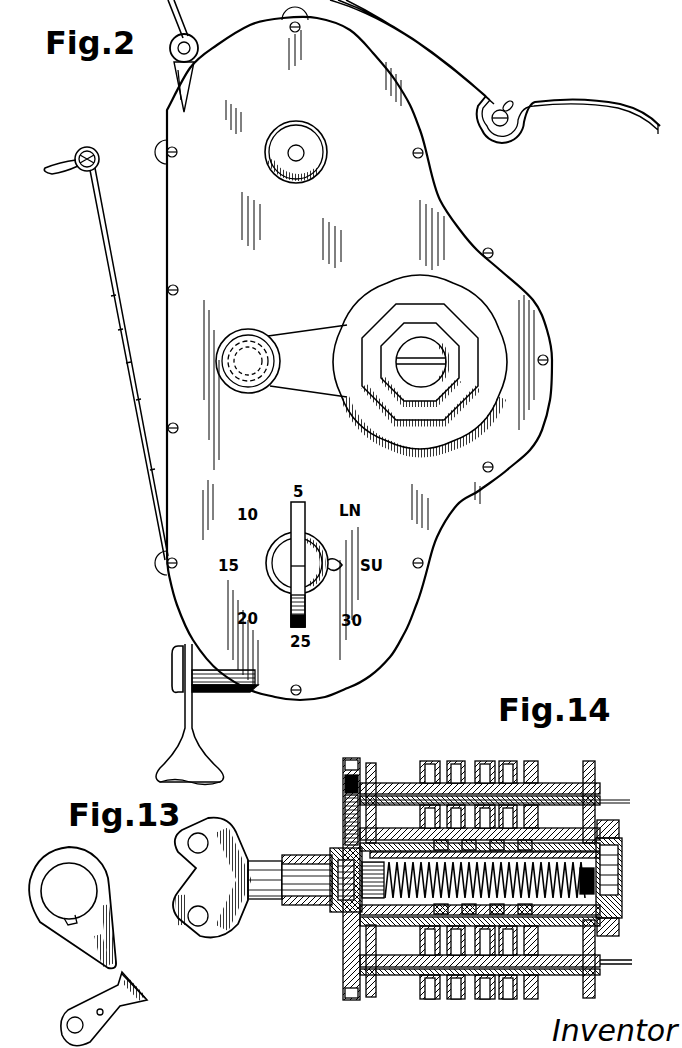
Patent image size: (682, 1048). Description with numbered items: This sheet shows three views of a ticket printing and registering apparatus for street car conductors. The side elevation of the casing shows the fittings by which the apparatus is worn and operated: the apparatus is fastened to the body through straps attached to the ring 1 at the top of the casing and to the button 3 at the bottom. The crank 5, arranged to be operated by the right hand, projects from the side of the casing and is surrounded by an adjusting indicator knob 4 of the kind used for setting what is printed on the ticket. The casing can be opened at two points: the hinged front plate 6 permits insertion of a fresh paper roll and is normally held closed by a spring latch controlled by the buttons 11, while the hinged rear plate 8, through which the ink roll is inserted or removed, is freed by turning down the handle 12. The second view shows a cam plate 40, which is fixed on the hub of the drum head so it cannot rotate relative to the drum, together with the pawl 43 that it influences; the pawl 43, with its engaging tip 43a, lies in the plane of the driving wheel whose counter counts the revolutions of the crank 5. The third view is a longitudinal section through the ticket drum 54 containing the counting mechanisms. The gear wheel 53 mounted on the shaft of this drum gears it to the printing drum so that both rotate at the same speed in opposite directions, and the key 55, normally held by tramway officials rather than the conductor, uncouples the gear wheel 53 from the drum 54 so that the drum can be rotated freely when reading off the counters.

In FIG. 2, the ring 1 is at (186, 6).
In FIG. 2, the button 3 is at (172, 667).
In FIG. 2, the adjusting knob 4 is at (466, 326).
In FIG. 2, the crank 5 is at (281, 361).
In FIG. 2, the hinged front plate 6 is at (520, 107).
In FIG. 2, the hinged rear plate 8 is at (110, 300).
In FIG. 2, the buttons 11 is at (313, 138).
In FIG. 2, the handle 12 is at (62, 180).
In FIG. 13, the cam plate 40 is at (108, 895).
In FIG. 13, the pawl 43 is at (114, 1020).
In FIG. 13, the pawl tip 43a is at (147, 1002).
In FIG. 14, the gear wheel 53 is at (343, 785).
In FIG. 14, the drum 54 is at (594, 775).
In FIG. 2, the key 55 is at (292, 527).
In FIG. 14, the key 55 is at (240, 926).